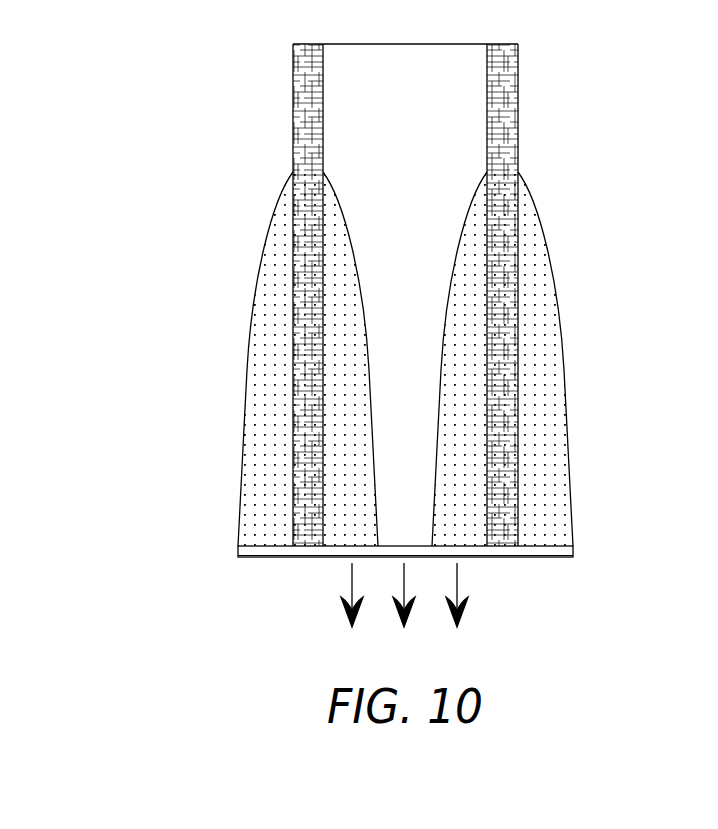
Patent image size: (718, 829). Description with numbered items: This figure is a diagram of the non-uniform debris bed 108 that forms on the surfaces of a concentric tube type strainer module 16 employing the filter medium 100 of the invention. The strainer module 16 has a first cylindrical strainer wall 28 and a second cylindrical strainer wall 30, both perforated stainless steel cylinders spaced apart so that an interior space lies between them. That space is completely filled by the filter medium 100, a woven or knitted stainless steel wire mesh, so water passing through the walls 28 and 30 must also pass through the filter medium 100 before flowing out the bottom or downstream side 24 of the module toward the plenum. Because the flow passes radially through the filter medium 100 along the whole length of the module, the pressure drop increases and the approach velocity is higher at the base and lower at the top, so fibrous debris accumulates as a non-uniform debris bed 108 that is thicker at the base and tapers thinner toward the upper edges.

The strainer module 16 is at (512, 112).
The filter medium 100 is at (310, 260).
The first cylindrical strainer wall 28 is at (298, 362).
The second cylindrical strainer wall 30 is at (300, 428).
The non-uniform debris bed 108 is at (283, 225).
The downstream side 24 is at (333, 550).